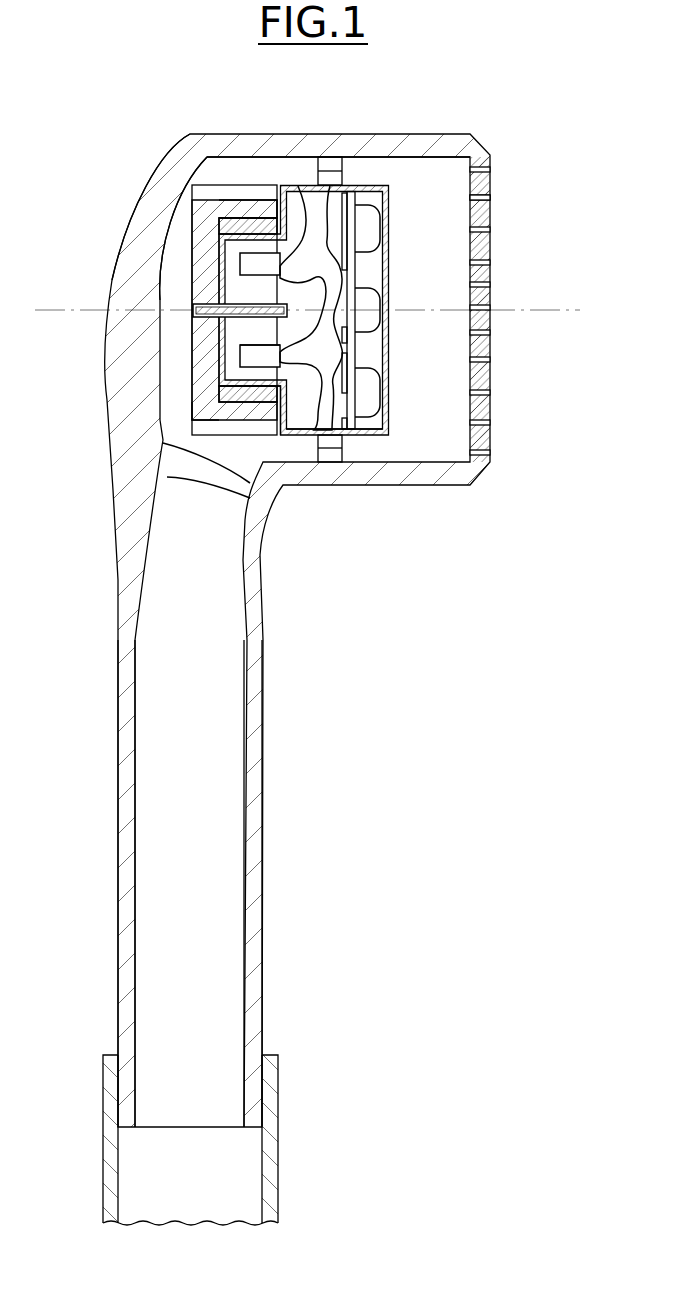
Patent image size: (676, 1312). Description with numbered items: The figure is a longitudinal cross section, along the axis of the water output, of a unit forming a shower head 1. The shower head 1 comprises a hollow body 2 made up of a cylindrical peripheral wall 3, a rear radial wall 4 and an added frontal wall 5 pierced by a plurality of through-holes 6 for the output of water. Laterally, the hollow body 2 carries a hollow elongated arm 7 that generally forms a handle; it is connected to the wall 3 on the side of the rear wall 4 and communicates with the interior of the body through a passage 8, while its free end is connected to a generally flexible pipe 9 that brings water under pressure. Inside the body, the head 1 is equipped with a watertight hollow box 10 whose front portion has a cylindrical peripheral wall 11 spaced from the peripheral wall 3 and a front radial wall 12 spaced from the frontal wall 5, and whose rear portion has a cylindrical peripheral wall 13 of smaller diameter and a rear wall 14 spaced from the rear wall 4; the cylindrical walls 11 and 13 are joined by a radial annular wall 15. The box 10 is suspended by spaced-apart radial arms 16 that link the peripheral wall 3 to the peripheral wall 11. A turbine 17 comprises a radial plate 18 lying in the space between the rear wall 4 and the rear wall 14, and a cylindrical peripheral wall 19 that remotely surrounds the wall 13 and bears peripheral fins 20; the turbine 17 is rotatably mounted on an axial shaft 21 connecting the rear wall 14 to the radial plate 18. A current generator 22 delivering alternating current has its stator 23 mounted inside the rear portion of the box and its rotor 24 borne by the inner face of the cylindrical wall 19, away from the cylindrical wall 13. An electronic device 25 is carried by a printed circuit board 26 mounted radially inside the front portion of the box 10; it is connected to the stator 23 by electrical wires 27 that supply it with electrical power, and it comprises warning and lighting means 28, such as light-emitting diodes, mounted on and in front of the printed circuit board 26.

The shower head 1 is at (62, 157).
The hollow body 2 is at (417, 133).
The cylindrical peripheral wall 3 is at (272, 140).
The rear radial wall 4 is at (127, 240).
The front wall 5 is at (487, 378).
The through-holes 6 is at (483, 197).
The hollow elongated arm 7 is at (252, 830).
The passage 8 is at (200, 472).
The flexible pipe 9 is at (270, 1163).
The watertight hollow box 10 is at (367, 181).
The cylindrical peripheral wall 11 is at (358, 440).
The front radial wall 12 is at (387, 400).
The cylindrical peripheral wall 13 is at (245, 368).
The rear wall 14 is at (250, 328).
The radial annular wall 15 is at (283, 398).
The radial arms 16 is at (330, 450).
The turbine 17 is at (190, 382).
The radial plate 18 is at (250, 262).
The cylindrical peripheral wall 19 is at (226, 223).
The peripheral fins 20 is at (245, 190).
The axial shaft 21 is at (250, 308).
The current generator 22 is at (287, 252).
The stator 23 is at (237, 210).
The rotor 24 is at (233, 223).
The electronic device 25 is at (380, 252).
The printed circuit board 26 is at (353, 278).
The electrical wires 27 is at (368, 264).
The warning and lighting means 28 is at (365, 338).